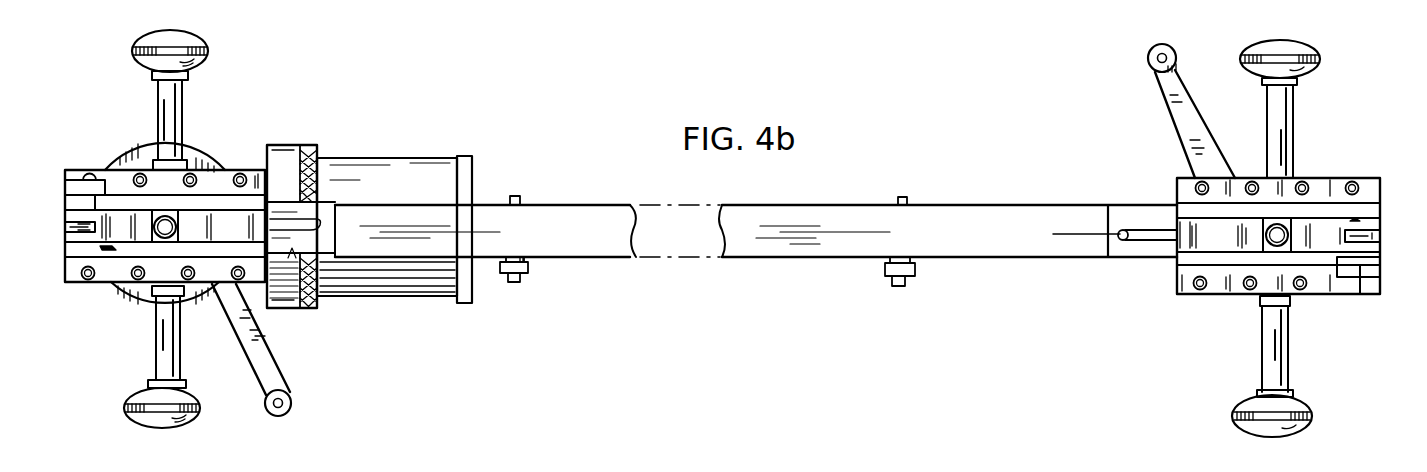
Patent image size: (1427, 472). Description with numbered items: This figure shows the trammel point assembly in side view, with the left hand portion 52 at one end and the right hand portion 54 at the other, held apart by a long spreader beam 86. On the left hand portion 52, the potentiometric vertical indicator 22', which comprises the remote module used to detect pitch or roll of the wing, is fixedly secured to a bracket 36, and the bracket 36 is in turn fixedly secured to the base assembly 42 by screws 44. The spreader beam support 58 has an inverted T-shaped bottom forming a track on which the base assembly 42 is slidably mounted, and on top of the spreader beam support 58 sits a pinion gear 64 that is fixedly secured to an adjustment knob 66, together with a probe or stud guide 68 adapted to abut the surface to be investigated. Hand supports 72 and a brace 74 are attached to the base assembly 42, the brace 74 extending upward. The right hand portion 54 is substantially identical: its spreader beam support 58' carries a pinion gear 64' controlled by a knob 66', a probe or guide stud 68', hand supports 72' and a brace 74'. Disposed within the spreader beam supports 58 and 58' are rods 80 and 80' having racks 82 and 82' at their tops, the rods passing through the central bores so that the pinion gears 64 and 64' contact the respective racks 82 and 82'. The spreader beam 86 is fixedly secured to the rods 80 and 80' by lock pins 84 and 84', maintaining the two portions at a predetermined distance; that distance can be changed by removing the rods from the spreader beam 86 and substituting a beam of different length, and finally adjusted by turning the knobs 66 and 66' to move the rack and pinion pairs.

The potentiometric vertical indicator 22' is at (394, 246).
The bracket 36 is at (270, 150).
The base assembly 42 is at (122, 167).
The screws 44 is at (162, 158).
The left hand portion 52 is at (388, 388).
The right hand portion 54 is at (1213, 352).
The spreader beam support 58 is at (230, 227).
The spreader beam support 58' is at (1219, 235).
The pinion gear 64 is at (119, 227).
The pinion gear 64' is at (1323, 235).
The adjustment knob 66 is at (71, 177).
The knob 66' is at (1363, 278).
The probe or stud guide 68 is at (183, 275).
The probe or guide stud 68' is at (1305, 197).
The hand supports 72 is at (146, 231).
The hand supports 72' is at (1279, 237).
The brace 74 is at (268, 350).
The brace 74' is at (1171, 111).
The rod 80 is at (310, 295).
The rod 80' is at (1109, 252).
The rack 82 is at (333, 183).
The rack 82' is at (1115, 204).
The lock pin 84 is at (532, 247).
The lock pin 84' is at (874, 247).
The spreader beam 86 is at (609, 264).